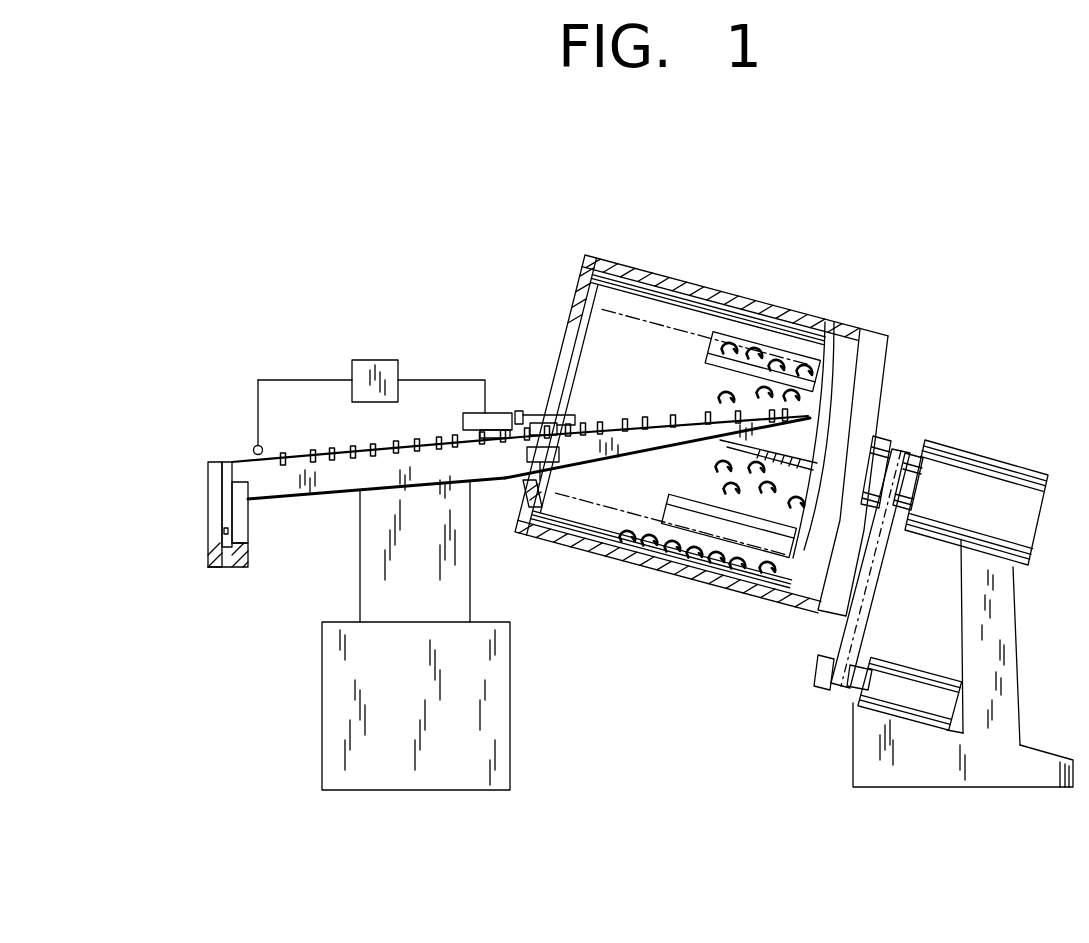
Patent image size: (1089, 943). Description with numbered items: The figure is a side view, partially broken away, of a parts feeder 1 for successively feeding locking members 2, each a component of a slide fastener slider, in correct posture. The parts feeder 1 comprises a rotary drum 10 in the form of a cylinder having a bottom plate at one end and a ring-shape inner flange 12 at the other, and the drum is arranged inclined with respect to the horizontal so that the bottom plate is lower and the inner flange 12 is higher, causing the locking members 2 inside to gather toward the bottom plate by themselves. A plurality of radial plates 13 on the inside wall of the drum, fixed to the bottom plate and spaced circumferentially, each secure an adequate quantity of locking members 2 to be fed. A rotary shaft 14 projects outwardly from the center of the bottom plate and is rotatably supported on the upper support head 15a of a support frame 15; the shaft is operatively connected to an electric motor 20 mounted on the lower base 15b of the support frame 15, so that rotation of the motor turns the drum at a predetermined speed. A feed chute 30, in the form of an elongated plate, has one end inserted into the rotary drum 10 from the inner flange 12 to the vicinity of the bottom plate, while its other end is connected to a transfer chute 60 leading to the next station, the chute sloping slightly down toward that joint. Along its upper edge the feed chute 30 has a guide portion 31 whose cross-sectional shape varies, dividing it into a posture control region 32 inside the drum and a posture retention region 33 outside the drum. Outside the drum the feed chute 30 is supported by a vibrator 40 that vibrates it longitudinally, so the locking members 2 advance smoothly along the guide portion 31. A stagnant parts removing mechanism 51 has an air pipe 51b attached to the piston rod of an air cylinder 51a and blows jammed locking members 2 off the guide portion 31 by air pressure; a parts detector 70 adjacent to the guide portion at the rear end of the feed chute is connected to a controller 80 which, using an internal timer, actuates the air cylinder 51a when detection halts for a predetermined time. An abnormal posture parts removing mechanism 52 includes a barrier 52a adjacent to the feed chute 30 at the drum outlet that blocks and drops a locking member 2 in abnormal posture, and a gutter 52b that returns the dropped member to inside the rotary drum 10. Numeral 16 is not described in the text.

The parts feeder 1 is at (486, 254).
The locking member 2 is at (332, 450).
The rotary drum 10 is at (879, 321).
The ring-shape inner flange 12 is at (574, 292).
The radial plates 13 is at (822, 345).
The rotary shaft 14 is at (878, 462).
The support frame 15 is at (993, 688).
The upper support head 15a is at (975, 490).
The lower base 15b is at (927, 762).
The drum end flange 16 is at (845, 623).
The electric motor 20 is at (900, 697).
The feed chute 30 is at (240, 458).
The guide portion 31 is at (457, 483).
The posture control region 32 is at (657, 416).
The posture retention region 33 is at (433, 436).
The vibrator 40 is at (428, 791).
The stagnant parts removing mechanism 51 is at (520, 409).
The air cylinder 51a is at (502, 406).
The air pipe 51b is at (568, 409).
The abnormal posture parts removing mechanism 52 is at (570, 450).
The barrier 52a is at (523, 432).
The gutter 52b is at (543, 465).
The transfer chute 60 is at (215, 513).
The parts detector 70 is at (253, 449).
The controller 80 is at (377, 364).